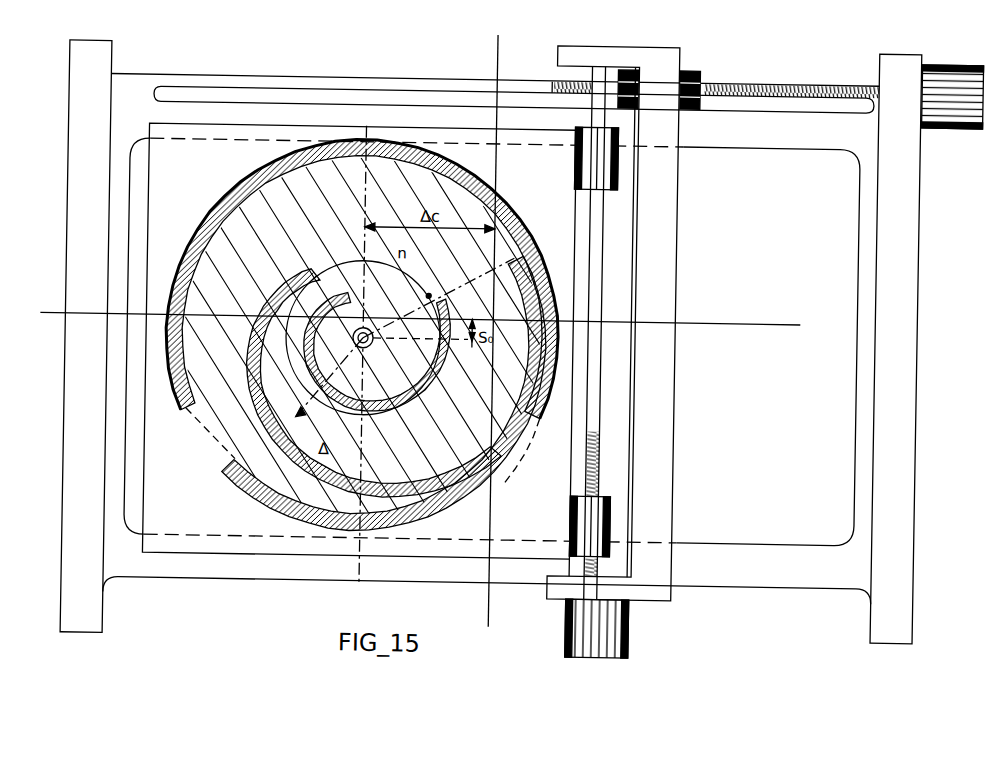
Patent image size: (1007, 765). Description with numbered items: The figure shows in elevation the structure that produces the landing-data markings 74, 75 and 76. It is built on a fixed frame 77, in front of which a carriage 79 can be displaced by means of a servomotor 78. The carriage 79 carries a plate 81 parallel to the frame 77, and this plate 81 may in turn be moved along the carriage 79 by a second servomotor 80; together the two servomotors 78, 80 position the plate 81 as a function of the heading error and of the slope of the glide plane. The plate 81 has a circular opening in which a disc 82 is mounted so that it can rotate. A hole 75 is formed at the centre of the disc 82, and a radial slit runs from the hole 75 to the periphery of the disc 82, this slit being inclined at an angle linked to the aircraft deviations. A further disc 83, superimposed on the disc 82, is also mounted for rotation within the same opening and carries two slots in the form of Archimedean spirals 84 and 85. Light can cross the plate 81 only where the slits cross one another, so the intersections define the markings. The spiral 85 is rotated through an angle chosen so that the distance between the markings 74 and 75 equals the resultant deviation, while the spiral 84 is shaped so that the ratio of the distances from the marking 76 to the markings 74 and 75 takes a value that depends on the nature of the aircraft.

The marking 74 is at (268, 437).
The hole 75 is at (373, 343).
The marking 76 is at (363, 337).
The fixed frame 77 is at (491, 343).
The servomotor 78 is at (767, 111).
The carriage 79 is at (613, 323).
The servomotor 80 is at (611, 629).
The plate 81 is at (572, 541).
The disc 82 is at (188, 412).
The disc 83 is at (193, 373).
The Archimedean spiral 84 is at (416, 393).
The Archimedean spiral 85 is at (418, 428).